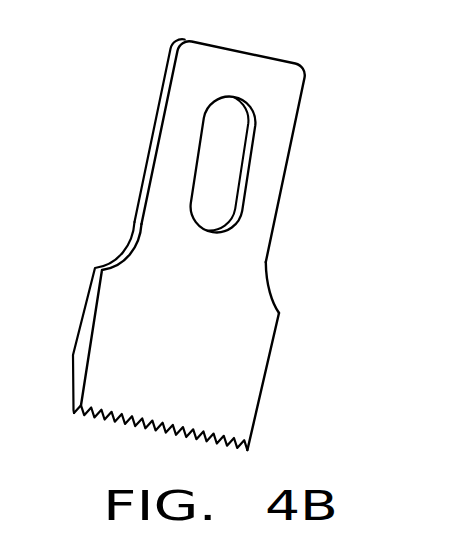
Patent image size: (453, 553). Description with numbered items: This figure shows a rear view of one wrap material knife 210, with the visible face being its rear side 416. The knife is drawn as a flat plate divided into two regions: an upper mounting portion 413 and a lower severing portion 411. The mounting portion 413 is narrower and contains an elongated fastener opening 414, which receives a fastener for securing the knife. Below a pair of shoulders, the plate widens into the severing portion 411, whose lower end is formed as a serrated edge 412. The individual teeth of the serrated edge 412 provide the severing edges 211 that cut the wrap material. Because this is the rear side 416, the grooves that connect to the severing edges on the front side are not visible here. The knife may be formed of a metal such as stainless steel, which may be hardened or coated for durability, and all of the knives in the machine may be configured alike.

The wrap material knife 210 is at (140, 103).
The severing edges 211 is at (95, 419).
The severing portion 411 is at (113, 310).
The serrated edge 412 is at (249, 451).
The mounting portion 413 is at (285, 168).
The fastener opening 414 is at (253, 117).
The rear side 416 is at (213, 322).